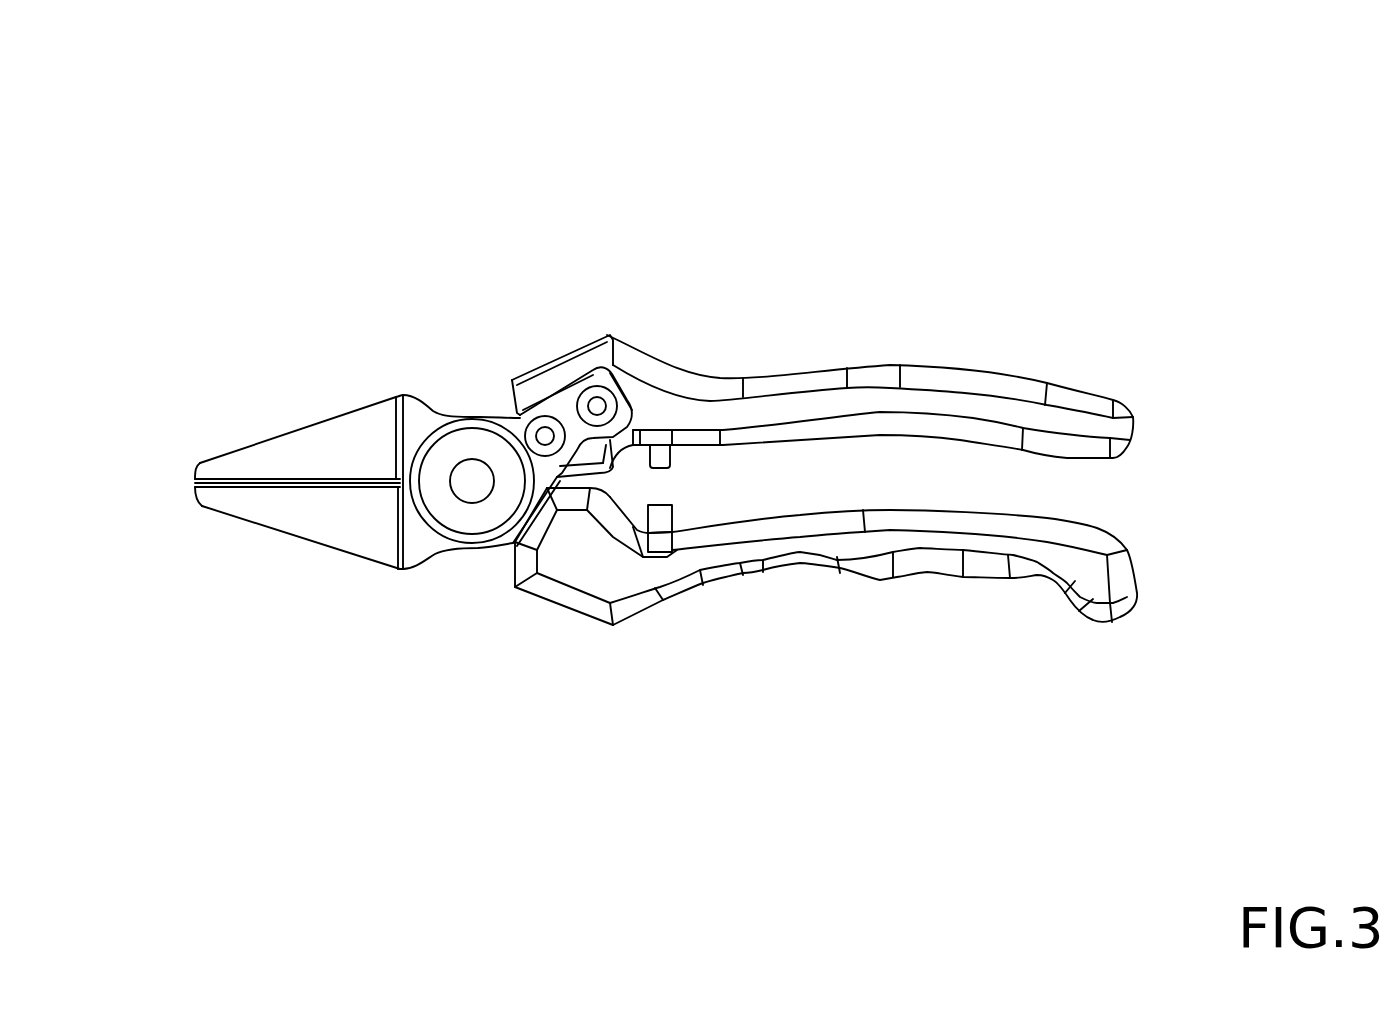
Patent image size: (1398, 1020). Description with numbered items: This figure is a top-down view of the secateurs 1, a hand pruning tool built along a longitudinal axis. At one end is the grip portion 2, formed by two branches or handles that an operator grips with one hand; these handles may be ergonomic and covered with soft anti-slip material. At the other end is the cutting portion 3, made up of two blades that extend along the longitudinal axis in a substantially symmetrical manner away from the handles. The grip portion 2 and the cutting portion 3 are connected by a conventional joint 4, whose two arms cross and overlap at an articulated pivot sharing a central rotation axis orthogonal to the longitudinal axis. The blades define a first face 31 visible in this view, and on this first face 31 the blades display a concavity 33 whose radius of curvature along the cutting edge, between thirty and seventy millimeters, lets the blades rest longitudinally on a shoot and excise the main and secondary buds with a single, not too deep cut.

The secateurs 1 is at (262, 197).
The grip portion 2 is at (1003, 295).
The cutting portion 3 is at (268, 375).
The first face 31 is at (291, 532).
The concavity 33 is at (340, 527).
The joint 4 is at (485, 330).